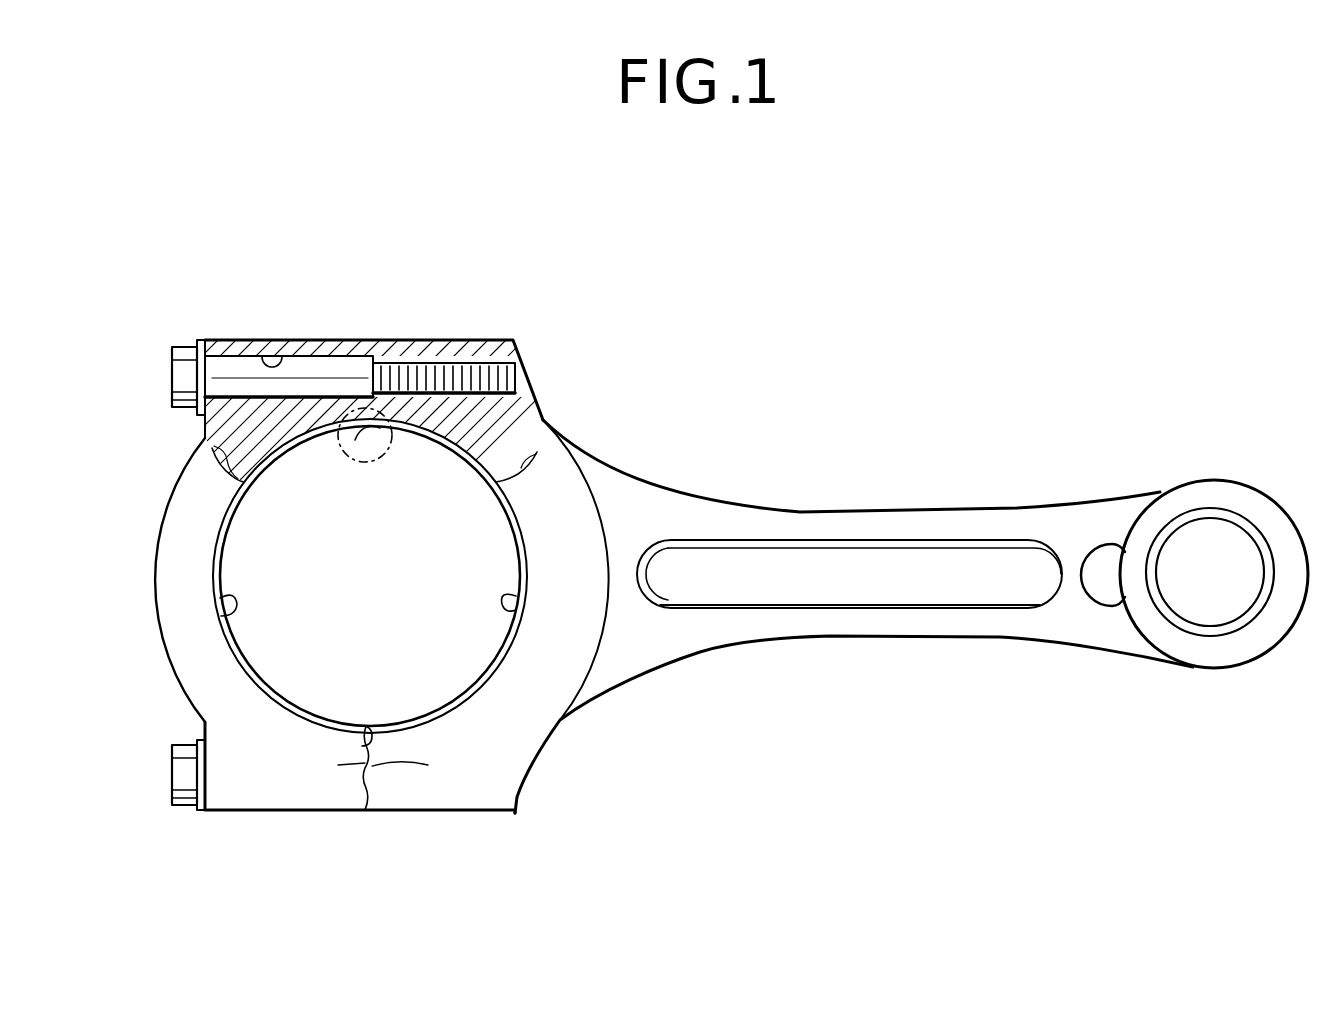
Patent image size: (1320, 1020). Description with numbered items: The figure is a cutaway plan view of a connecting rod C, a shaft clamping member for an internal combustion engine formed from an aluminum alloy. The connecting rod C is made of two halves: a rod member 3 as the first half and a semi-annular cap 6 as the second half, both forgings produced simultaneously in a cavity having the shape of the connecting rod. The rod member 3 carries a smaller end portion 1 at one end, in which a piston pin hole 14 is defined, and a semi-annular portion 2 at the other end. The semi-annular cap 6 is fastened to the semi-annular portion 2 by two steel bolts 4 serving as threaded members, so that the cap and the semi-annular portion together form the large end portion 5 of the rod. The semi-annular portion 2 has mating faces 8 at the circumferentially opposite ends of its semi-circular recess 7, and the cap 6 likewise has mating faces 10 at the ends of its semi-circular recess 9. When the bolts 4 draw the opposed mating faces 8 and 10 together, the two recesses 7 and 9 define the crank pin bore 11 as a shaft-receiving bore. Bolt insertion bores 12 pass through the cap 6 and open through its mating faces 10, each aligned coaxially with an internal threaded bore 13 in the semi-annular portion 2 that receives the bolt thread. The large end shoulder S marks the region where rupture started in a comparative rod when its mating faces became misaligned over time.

The smaller end portion 1 is at (1194, 588).
The semi-annular portion 2 is at (318, 542).
The rod member 3 is at (782, 507).
The steel bolts 4 is at (312, 537).
The large end portion 5 is at (318, 372).
The semi-annular cap 6 is at (173, 540).
The semi-circular recess 7 is at (512, 604).
The mating faces 8 is at (352, 342).
The semi-circular recess 9 is at (232, 610).
The mating faces 10 is at (355, 455).
The crank pin bore 11 is at (338, 605).
The bolt insertion bores 12 is at (272, 357).
The internal threaded bores 13 is at (432, 372).
The piston pin hole 14 is at (1232, 628).
The large end shoulder S is at (540, 410).
The connecting rod C is at (990, 452).